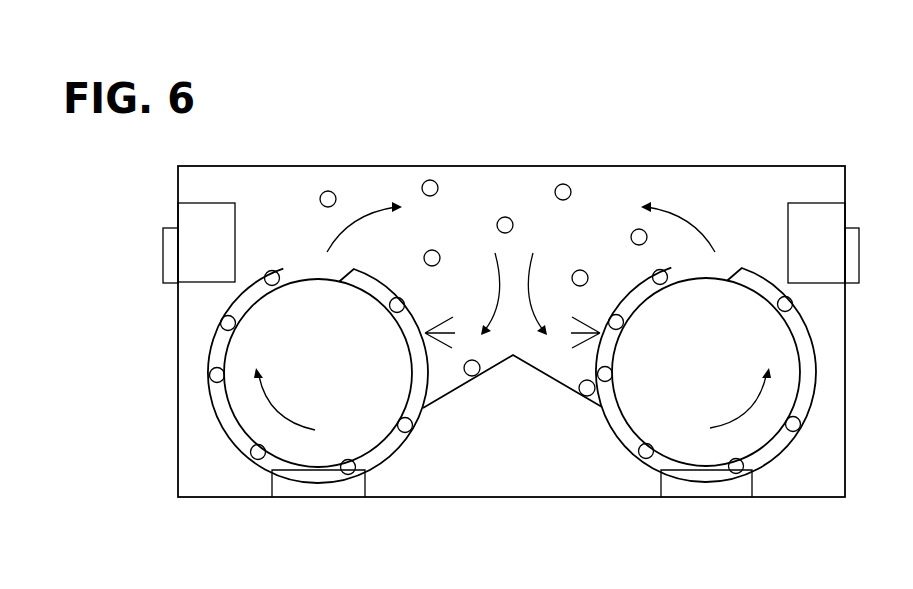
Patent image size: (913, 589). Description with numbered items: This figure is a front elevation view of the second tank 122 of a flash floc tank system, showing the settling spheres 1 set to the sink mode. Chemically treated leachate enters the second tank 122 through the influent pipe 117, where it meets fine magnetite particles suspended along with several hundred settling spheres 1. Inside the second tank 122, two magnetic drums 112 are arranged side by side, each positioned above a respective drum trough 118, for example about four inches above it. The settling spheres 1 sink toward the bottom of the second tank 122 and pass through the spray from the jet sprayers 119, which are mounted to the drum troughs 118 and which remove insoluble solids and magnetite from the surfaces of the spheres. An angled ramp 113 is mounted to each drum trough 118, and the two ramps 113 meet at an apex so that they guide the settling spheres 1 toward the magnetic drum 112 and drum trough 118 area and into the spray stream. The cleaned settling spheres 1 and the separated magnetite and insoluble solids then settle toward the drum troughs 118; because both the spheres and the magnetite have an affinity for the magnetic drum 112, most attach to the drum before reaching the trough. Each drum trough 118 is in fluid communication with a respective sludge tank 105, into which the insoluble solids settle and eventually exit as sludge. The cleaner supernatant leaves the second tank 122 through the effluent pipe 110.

The settling sphere 1 is at (320, 199).
The sludge tank 105 is at (322, 490).
The effluent pipe 110 is at (834, 251).
The magnetic drum 112 is at (337, 381).
The ramp 113 is at (445, 395).
The influent pipe 117 is at (221, 251).
The drum trough 118 is at (317, 474).
The jet sprayer 119 is at (425, 333).
The second tank 122 is at (177, 378).